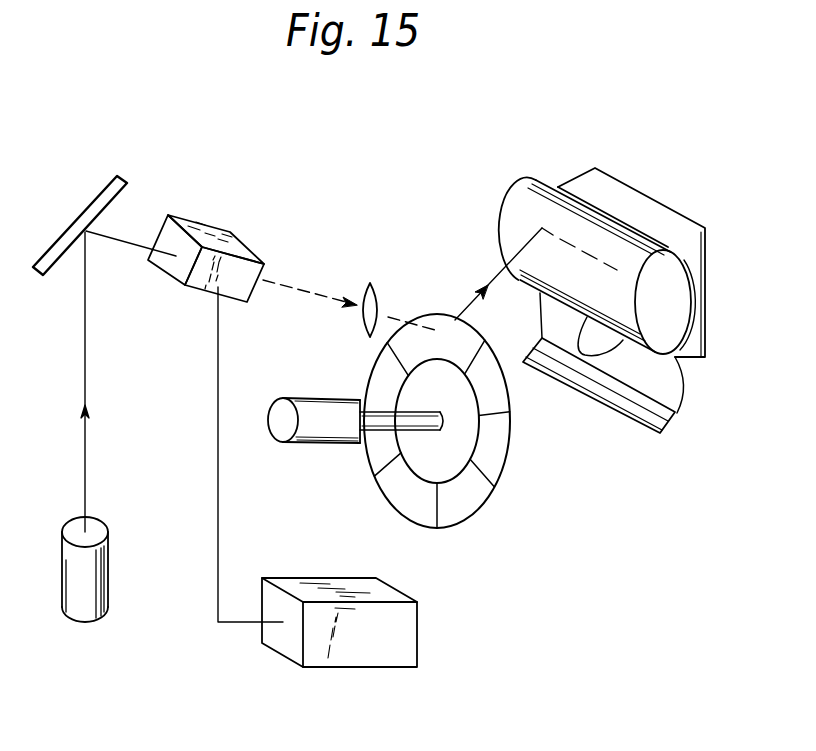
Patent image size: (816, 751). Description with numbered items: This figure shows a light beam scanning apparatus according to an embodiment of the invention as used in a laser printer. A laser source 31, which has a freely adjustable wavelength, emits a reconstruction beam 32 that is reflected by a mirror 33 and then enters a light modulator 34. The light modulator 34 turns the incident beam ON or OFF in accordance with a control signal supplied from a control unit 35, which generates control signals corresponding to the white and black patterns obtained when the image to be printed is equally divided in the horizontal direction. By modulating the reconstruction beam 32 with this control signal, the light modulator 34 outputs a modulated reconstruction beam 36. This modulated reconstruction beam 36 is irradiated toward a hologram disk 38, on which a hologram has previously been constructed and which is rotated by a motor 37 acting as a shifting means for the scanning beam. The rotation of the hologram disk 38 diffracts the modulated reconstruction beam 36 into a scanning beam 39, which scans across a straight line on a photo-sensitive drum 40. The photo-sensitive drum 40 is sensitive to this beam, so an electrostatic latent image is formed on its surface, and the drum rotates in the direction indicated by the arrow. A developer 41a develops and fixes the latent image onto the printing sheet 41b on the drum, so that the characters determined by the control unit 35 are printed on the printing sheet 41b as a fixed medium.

The laser source 31 is at (110, 575).
The reconstruction beam 32 is at (85, 463).
The mirror 33 is at (98, 192).
The light modulator 34 is at (206, 222).
The control unit 35 is at (417, 637).
The modulated reconstruction beam 36 is at (305, 291).
The motor 37 is at (315, 445).
The hologram disk 38 is at (432, 316).
The scanning beam 39 is at (482, 300).
The photo-sensitive drum 40 is at (514, 182).
The developer 41a is at (650, 193).
The printing sheet 41b is at (680, 420).